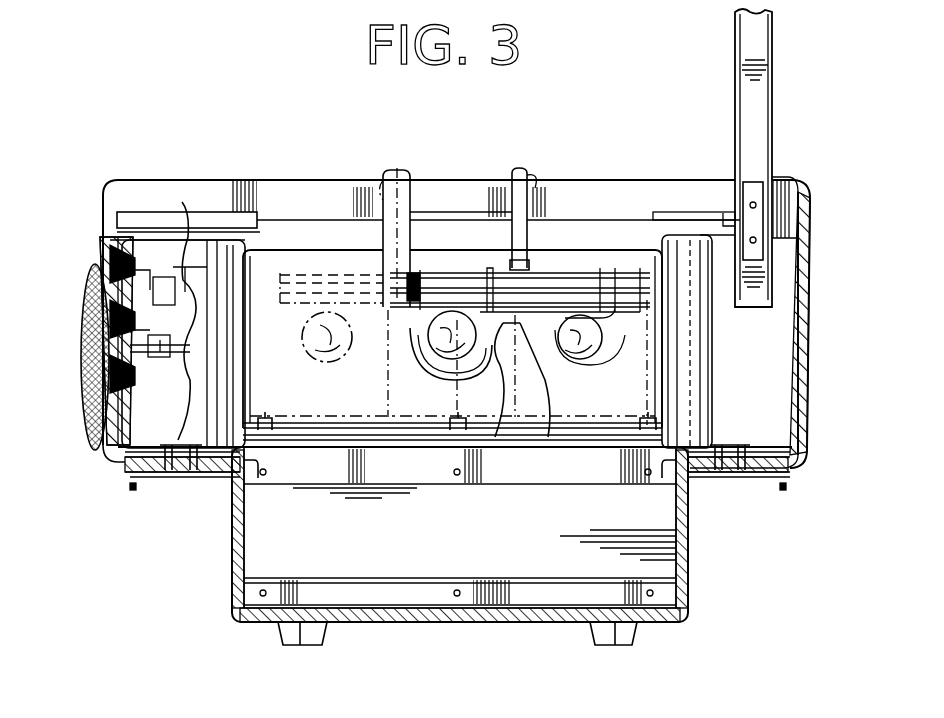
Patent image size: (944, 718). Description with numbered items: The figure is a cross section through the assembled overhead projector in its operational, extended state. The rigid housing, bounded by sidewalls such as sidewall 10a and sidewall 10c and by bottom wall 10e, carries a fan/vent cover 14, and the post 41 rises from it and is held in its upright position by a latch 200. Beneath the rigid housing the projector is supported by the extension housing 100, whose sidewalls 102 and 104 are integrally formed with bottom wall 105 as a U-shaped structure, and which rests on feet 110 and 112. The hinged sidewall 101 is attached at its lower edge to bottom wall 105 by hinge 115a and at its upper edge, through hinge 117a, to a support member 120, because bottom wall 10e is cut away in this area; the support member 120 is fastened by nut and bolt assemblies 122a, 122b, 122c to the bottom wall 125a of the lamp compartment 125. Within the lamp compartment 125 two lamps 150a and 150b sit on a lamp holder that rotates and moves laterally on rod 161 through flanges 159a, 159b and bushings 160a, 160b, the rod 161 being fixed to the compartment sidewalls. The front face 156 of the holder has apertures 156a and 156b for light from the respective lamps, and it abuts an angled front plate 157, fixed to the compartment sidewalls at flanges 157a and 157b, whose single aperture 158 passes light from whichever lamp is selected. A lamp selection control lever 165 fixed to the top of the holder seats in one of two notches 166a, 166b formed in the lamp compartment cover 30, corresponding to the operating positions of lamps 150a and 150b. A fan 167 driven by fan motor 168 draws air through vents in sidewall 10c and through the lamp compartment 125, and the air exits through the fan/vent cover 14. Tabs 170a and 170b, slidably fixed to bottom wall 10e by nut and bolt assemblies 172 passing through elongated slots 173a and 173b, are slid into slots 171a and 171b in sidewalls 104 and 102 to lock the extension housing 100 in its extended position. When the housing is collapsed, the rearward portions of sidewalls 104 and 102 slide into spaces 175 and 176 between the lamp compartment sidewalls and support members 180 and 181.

The sidewall 10a is at (100, 262).
The sidewall 10c is at (800, 310).
The bottom wall 10e is at (800, 432).
The fan/vent cover 14 is at (88, 392).
The lamp housing compartment cover 30 is at (623, 190).
The post 41 is at (745, 40).
The extension housing 100 is at (688, 602).
The sidewall 101 is at (458, 542).
The sidewall 102 is at (684, 572).
The sidewall 104 is at (233, 590).
The bottom wall 105 is at (480, 623).
The foot 110 is at (313, 645).
The foot 112 is at (623, 645).
The hinge 115a is at (363, 596).
The hinge 117a is at (460, 541).
The support member 120 is at (277, 447).
The nut and bolt assembly 122a is at (270, 413).
The nut and bolt assembly 122b is at (463, 420).
The nut and bolt assembly 122c is at (645, 440).
The lamp compartment 125 is at (366, 474).
The bottom wall 125a is at (612, 466).
The lamp 150a is at (330, 382).
The lamp 150b is at (560, 350).
The front face 156 is at (277, 300).
The aperture 156a is at (345, 337).
The aperture 156b is at (582, 355).
The angled front plate 157 is at (493, 407).
The flange 157a is at (233, 185).
The flange 157b is at (670, 345).
The aperture 158 is at (533, 385).
The flange 159a is at (290, 273).
The flange 159b is at (636, 228).
The bushing 160a is at (428, 290).
The bushing 160b is at (596, 268).
The rod 161 is at (633, 362).
The lamp selection control lever 165 is at (402, 172).
The notch 166a is at (388, 183).
The notch 166b is at (535, 183).
The fan 167 is at (125, 284).
The fan motor 168 is at (188, 310).
The tab 170a is at (133, 486).
The tab 170b is at (795, 478).
The slot 171a is at (252, 478).
The slot 171b is at (680, 493).
The nut and bolt assembly 172 is at (200, 447).
The elongated slot 173a is at (197, 470).
The elongated slot 173b is at (783, 485).
The space 175 is at (257, 385).
The space 176 is at (677, 387).
The support member 180 is at (225, 355).
The support member 181 is at (694, 318).
The latch 200 is at (770, 195).